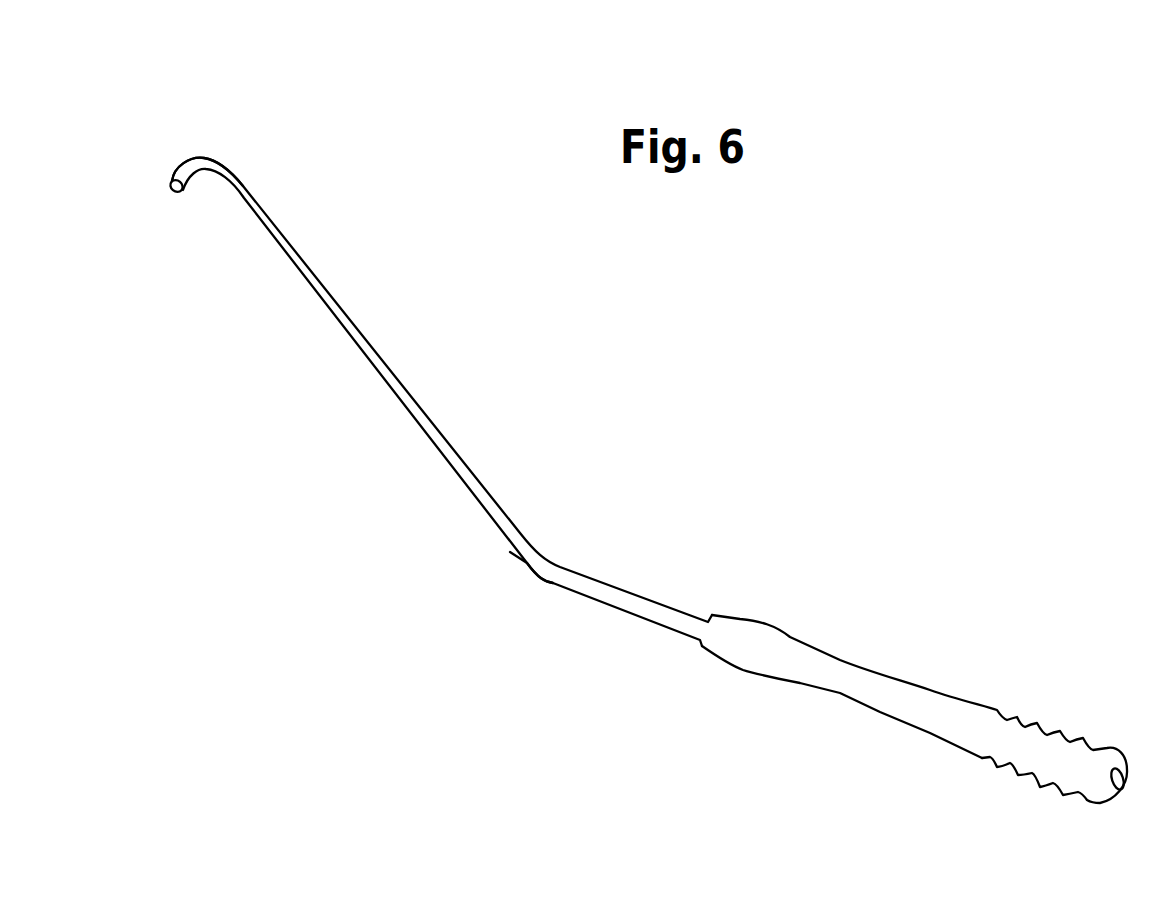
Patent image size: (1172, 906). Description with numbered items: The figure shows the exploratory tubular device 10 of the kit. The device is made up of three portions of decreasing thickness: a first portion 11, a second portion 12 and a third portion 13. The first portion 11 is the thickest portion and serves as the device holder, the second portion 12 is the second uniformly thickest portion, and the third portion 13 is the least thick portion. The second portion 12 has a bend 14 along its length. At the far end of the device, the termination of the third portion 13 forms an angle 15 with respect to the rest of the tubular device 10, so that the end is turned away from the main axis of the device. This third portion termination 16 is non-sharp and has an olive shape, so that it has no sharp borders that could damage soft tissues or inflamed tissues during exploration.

The exploratory tubular device 10 is at (600, 600).
The first portion 11 is at (1107, 817).
The second portion 12 is at (712, 603).
The third portion 13 is at (158, 194).
The bend 14 is at (527, 563).
The angle 15 is at (210, 157).
The third portion termination 16 is at (172, 178).